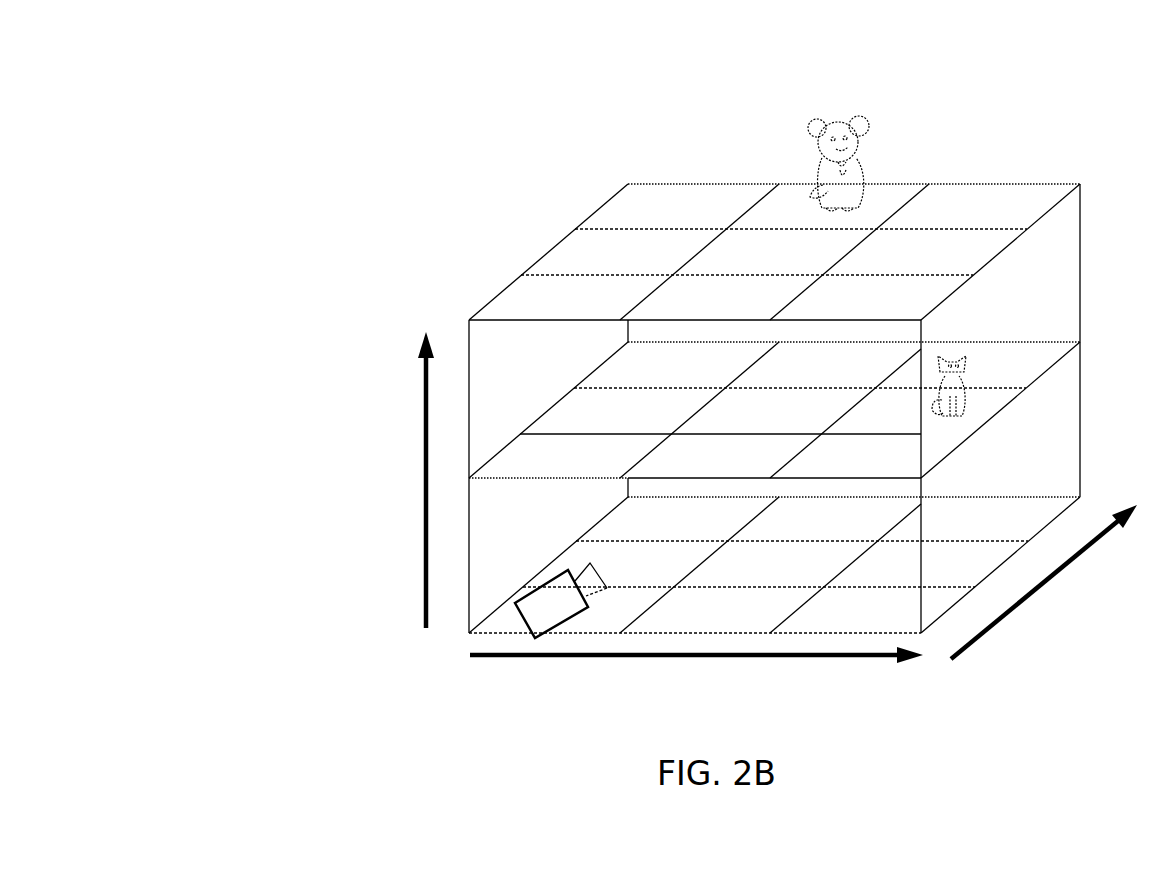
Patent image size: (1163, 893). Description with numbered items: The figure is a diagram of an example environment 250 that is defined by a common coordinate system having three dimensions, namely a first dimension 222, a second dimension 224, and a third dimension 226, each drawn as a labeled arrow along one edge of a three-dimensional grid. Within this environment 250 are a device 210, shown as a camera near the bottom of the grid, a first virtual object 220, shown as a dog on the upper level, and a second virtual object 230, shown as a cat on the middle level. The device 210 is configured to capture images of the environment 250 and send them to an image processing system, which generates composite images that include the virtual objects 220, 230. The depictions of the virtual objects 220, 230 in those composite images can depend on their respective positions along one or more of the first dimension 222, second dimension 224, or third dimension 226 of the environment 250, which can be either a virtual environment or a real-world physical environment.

The environment 250 is at (250, 105).
The first virtual object 220 is at (790, 100).
The second virtual object 230 is at (970, 389).
The device 210 is at (561, 600).
The first dimension 222 is at (696, 667).
The second dimension 224 is at (1033, 568).
The third dimension 226 is at (411, 480).